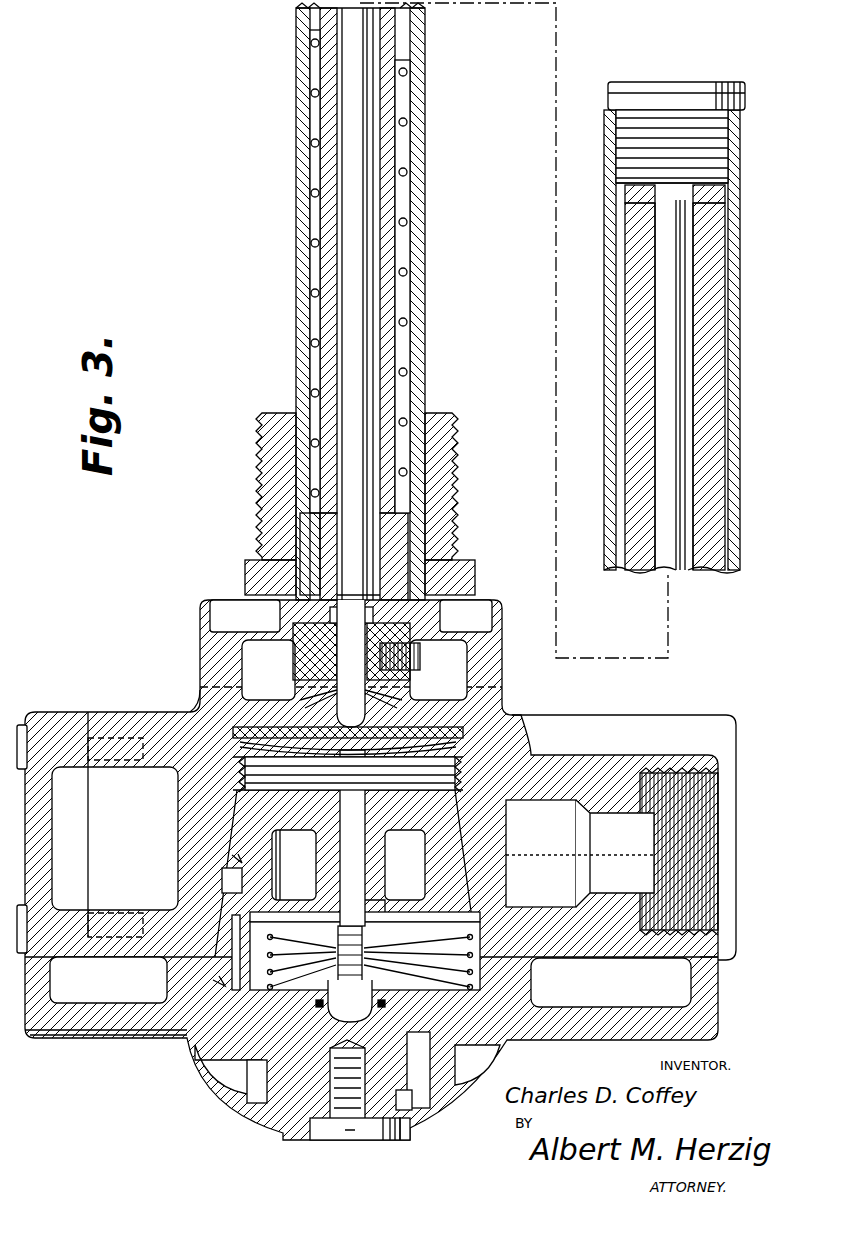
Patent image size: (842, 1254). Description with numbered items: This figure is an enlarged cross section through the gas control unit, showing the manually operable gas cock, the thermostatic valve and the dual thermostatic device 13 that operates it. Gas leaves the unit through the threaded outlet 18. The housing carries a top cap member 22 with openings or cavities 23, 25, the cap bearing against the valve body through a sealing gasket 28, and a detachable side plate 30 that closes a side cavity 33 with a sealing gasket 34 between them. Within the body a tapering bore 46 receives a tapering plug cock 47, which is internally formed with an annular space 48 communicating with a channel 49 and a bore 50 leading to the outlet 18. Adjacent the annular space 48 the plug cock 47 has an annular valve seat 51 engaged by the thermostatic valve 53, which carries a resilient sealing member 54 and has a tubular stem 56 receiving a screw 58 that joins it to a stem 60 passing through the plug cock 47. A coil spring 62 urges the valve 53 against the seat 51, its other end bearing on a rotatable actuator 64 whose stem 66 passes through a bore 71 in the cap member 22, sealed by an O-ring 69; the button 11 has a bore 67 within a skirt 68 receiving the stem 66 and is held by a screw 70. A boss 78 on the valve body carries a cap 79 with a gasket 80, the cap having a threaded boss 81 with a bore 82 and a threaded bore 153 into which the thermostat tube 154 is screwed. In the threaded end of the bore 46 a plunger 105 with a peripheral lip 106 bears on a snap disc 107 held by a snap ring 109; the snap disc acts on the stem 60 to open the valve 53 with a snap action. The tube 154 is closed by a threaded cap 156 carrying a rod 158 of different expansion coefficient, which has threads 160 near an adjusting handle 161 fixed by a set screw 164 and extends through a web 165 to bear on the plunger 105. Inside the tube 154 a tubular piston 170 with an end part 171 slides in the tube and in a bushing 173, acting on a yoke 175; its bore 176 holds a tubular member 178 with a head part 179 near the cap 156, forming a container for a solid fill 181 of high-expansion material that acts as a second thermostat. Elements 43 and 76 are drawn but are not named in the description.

The handle or button 11 is at (462, 1095).
The thermostat 13 is at (428, 160).
The outlet 18 is at (737, 802).
The top cap member 22 is at (575, 1030).
The opening or cavity 23 is at (108, 980).
The opening or cavity 25 is at (611, 982).
The sealing gasket 28 is at (716, 964).
The side plate or cover 30 is at (28, 876).
The opening or cavity 33 is at (112, 826).
The sealing gasket 34 is at (90, 714).
The boss 43 is at (195, 1043).
The tapering bore 46 is at (235, 815).
The plug cock 47 is at (242, 862).
The annular space 48 is at (405, 864).
The passage or channel 49 is at (462, 840).
The bore or opening 50 is at (540, 803).
The annular valve seat 51 is at (396, 914).
The thermostatic valve 53 is at (340, 950).
The resilient annular sealing member 54 is at (290, 882).
The tubular stem 56 is at (350, 1001).
The screw or threaded member 58 is at (368, 897).
The stem 60 is at (349, 838).
The coil spring 62 is at (432, 930).
The rotatable actuator 64 is at (225, 985).
The actuator stem 66 is at (408, 1130).
The bore 67 is at (332, 1130).
The skirt 68 is at (300, 1095).
The sealing O-ring 69 is at (410, 1070).
The screw 70 is at (360, 1142).
The bore 71 is at (406, 1095).
The seat 76 is at (225, 878).
The boss 78 is at (203, 698).
The cap 79 is at (200, 622).
The sealing gasket 80 is at (210, 660).
The threaded boss or plug 81 is at (256, 432).
The bore 82 is at (425, 415).
The disc or plunger member 105 is at (276, 700).
The peripheral lip 106 is at (495, 705).
The snap disc 107 is at (440, 700).
The snap ring member 109 is at (236, 745).
The threaded bore 153 is at (288, 570).
The tube 154 is at (298, 240).
The threaded cap 156 is at (668, 82).
The rod 158 is at (665, 270).
The threads 160 is at (358, 567).
The adjusting handle 161 is at (300, 690).
The set screw 164 is at (351, 663).
The web 165 is at (405, 692).
The tubular piston 170 is at (320, 130).
The end part 171 is at (297, 22).
The bushing 173 is at (305, 540).
The yoke 175 is at (470, 593).
The bore 176 is at (330, 322).
The tubular member 178 is at (700, 445).
The head part 179 is at (735, 198).
The solid fill 181 is at (630, 520).